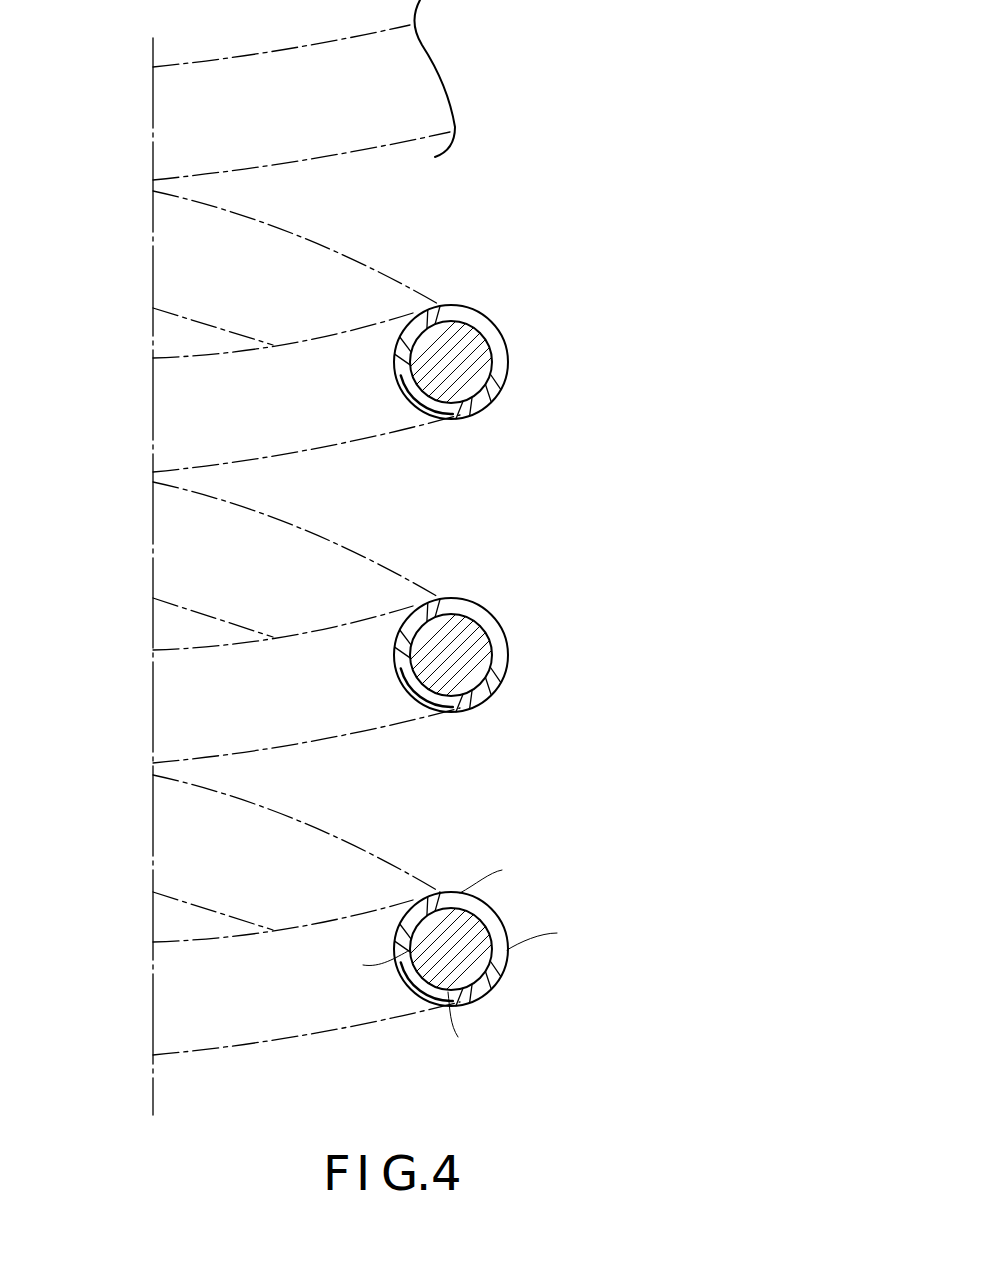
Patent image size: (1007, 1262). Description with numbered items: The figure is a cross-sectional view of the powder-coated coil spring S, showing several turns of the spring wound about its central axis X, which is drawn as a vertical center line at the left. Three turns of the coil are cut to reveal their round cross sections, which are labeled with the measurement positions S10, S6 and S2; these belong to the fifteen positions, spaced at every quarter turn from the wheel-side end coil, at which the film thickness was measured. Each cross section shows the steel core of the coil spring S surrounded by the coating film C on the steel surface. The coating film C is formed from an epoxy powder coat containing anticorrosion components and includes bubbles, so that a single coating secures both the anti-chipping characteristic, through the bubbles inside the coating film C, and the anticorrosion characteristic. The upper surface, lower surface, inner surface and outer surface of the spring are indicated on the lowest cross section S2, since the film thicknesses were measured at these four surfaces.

The central axis X is at (152, 561).
The measurement position S10 is at (438, 302).
The measurement position S6 is at (473, 611).
The measurement position S2 is at (438, 887).
The coating film C is at (473, 655).
The coil spring S is at (481, 655).